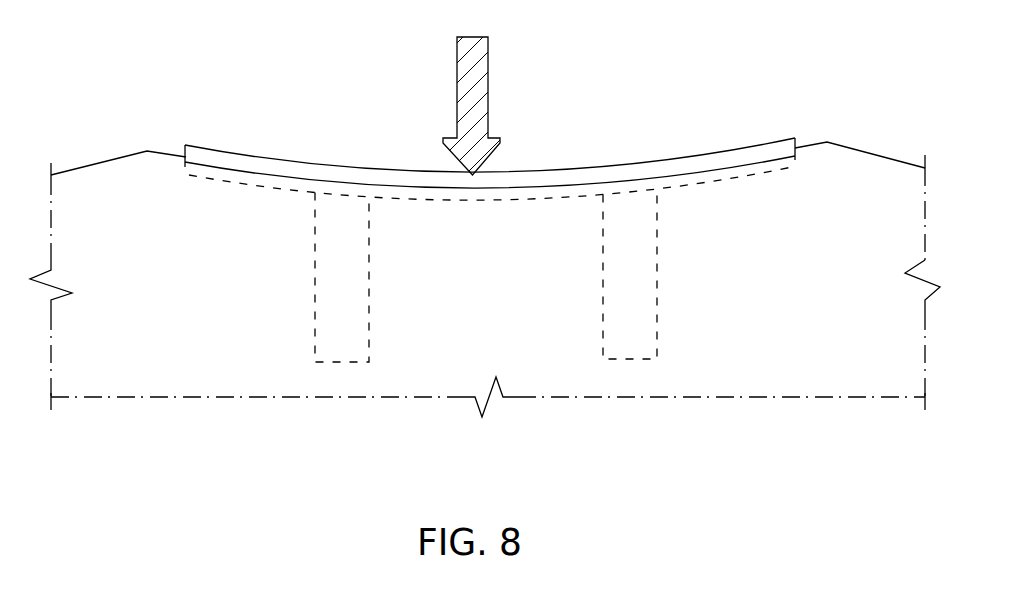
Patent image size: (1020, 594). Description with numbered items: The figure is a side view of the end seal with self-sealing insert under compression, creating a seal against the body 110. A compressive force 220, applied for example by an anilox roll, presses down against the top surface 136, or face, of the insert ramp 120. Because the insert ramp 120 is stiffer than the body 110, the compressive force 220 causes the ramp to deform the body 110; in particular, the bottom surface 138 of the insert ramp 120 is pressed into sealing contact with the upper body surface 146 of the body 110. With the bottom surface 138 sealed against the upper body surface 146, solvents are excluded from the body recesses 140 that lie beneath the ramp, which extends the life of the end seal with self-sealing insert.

The body 110 is at (868, 167).
The insert ramp 120 is at (490, 140).
The top surface 136 is at (282, 160).
The bottom surface 138 is at (228, 182).
The body recesses 140 is at (369, 287).
The upper body surface 146 is at (167, 153).
The compressive force 220 is at (488, 87).